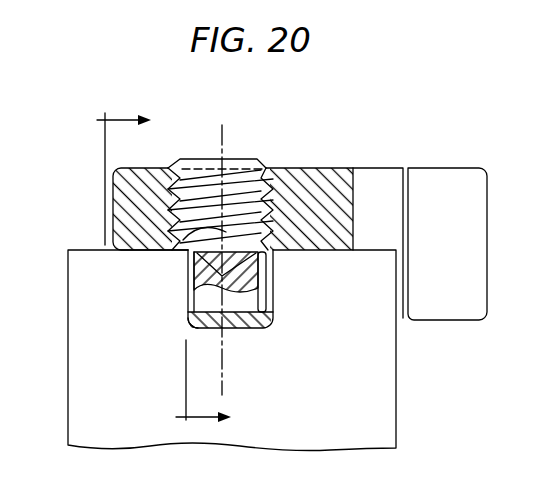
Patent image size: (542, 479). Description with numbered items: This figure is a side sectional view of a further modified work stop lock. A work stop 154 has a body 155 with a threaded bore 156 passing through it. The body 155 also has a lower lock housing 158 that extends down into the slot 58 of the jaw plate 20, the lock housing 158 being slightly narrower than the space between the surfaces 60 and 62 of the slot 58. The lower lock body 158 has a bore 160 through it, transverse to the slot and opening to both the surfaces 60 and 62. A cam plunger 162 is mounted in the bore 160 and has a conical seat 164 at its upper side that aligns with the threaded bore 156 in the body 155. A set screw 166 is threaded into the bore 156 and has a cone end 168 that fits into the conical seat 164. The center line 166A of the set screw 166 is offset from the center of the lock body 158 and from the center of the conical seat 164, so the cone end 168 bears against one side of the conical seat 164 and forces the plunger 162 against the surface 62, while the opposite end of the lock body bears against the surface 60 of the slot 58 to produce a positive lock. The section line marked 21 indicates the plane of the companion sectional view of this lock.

The jaw plate 20 is at (382, 385).
The section line 21- 21 is at (183, 264).
The slot 58 is at (272, 327).
The surface 60 is at (272, 267).
The surface 62 is at (190, 336).
The work stop 154 is at (339, 168).
The body 155 is at (298, 186).
The threaded bore 156 is at (113, 187).
The lower lock housing 158 is at (262, 329).
The bore 160 is at (273, 303).
The cam plunger 162 is at (188, 300).
The conical seat 164 is at (183, 236).
The set screw 166 is at (203, 163).
The center line 166A is at (218, 370).
The cone end 168 is at (222, 272).